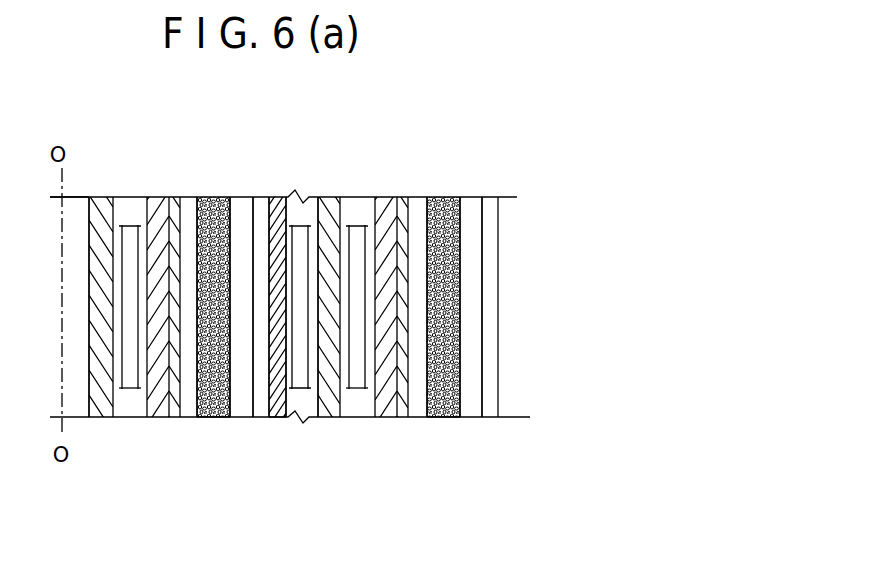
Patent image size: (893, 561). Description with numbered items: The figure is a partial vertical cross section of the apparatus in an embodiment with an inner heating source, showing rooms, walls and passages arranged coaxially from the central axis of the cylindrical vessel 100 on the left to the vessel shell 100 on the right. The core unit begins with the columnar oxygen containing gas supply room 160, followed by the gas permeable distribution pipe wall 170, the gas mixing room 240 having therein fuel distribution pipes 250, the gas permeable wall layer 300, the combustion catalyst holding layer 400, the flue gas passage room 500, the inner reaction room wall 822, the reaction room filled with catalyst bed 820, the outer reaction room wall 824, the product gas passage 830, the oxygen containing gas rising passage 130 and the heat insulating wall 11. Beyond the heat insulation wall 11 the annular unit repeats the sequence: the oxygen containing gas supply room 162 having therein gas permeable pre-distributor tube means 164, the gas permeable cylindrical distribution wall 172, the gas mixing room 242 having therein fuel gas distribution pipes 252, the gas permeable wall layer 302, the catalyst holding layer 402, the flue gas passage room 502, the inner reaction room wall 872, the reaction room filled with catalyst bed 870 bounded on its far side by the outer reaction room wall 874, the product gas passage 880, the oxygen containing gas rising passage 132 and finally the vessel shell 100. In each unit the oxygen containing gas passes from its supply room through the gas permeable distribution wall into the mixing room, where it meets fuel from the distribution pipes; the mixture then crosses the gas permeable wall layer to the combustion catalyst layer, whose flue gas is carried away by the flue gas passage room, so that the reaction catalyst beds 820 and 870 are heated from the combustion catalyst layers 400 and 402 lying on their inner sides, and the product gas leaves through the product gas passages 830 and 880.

The cylindrical vessel 100 is at (500, 272).
The heat insulating wall 11 is at (278, 418).
The oxygen containing gas rising passage 130 is at (263, 208).
The oxygen containing gas rising passage 132 is at (492, 208).
The oxygen containing gas supply room 160 is at (73, 208).
The oxygen containing gas supply room 162 is at (289, 208).
The gas permeable pre-distributor tube means 164 is at (313, 418).
The gas permeable distribution pipe wall 170 is at (98, 208).
The gas permeable cylindrical distribution wall 172 is at (330, 208).
The gas mixing room 240 is at (127, 208).
The gas mixing room 242 is at (358, 208).
The fuel distribution pipes 250 is at (130, 392).
The fuel gas distribution pipes 252 is at (357, 392).
The gas permeable wall layer 300 is at (153, 208).
The gas permeable wall layer 302 is at (387, 208).
The combustion catalyst holding layer 400 is at (176, 412).
The catalyst holding layer 402 is at (403, 410).
The flue gas passage room 500 is at (188, 208).
The flue gas passage room 502 is at (415, 208).
The catalyst bed 820 is at (213, 208).
The inner reaction room wall 822 is at (208, 418).
The outer reaction room wall 824 is at (223, 418).
The product gas passage 830 is at (242, 208).
The catalyst bed 870 is at (440, 208).
The inner reaction room wall 872 is at (443, 418).
The outer reaction room wall 874 is at (456, 418).
The product gas passage 880 is at (468, 208).